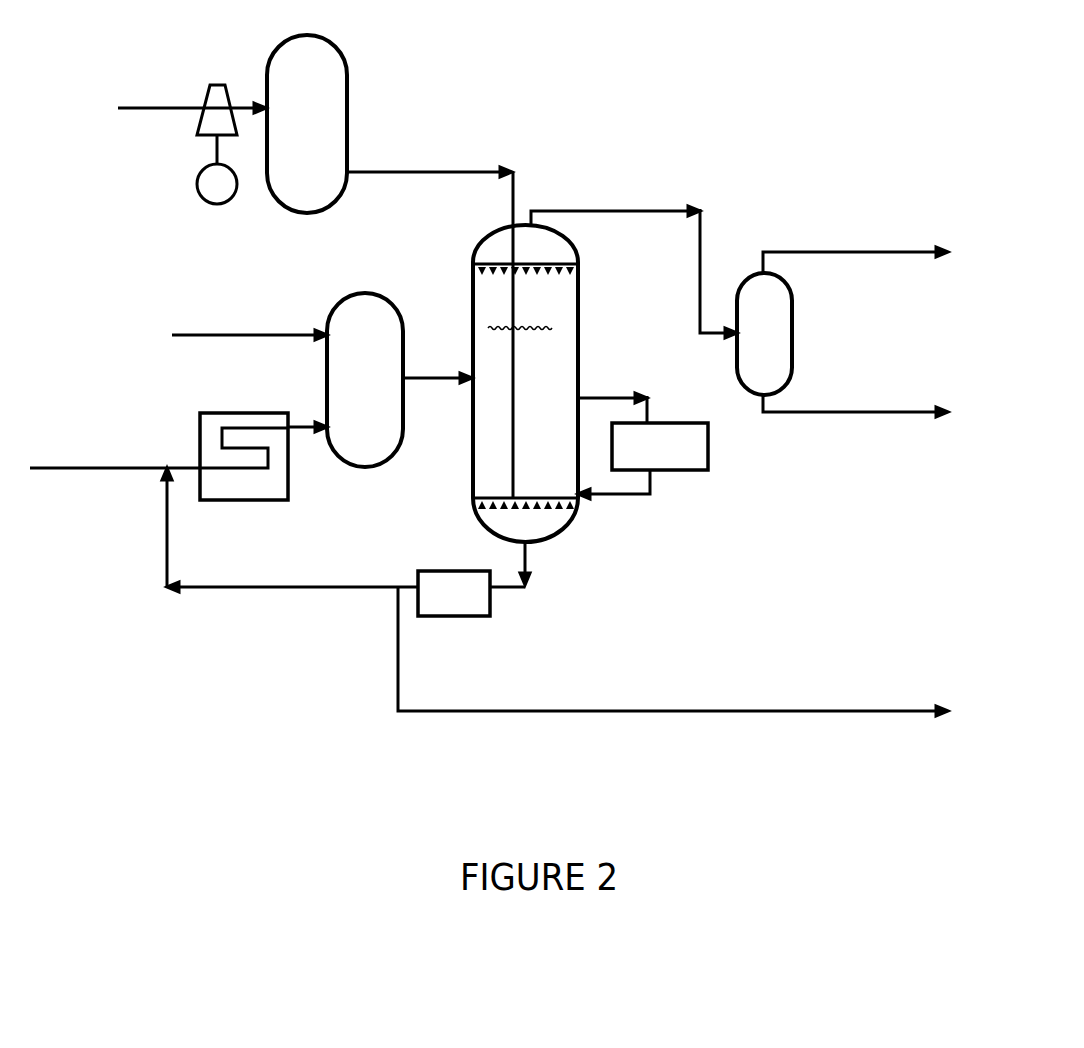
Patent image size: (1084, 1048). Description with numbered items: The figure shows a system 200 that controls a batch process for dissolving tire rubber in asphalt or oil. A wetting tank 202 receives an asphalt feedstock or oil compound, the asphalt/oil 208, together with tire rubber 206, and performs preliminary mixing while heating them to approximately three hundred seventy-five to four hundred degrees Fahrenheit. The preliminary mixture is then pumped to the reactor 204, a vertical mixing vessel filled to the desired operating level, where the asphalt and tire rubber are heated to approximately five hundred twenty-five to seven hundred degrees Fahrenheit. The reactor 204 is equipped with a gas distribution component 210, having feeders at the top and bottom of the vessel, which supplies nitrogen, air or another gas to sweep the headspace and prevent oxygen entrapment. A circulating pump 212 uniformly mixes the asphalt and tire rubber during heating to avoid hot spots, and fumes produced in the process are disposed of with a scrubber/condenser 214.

The system 200 is at (676, 126).
The wetting tank 202 is at (358, 292).
The reactor 204 is at (478, 252).
The tire rubber 206 is at (172, 305).
The asphalt/oil 208 is at (108, 440).
The gas distribution component 210 is at (268, 70).
The circulating pump 212 is at (709, 451).
The scrubber/condenser 214 is at (793, 306).